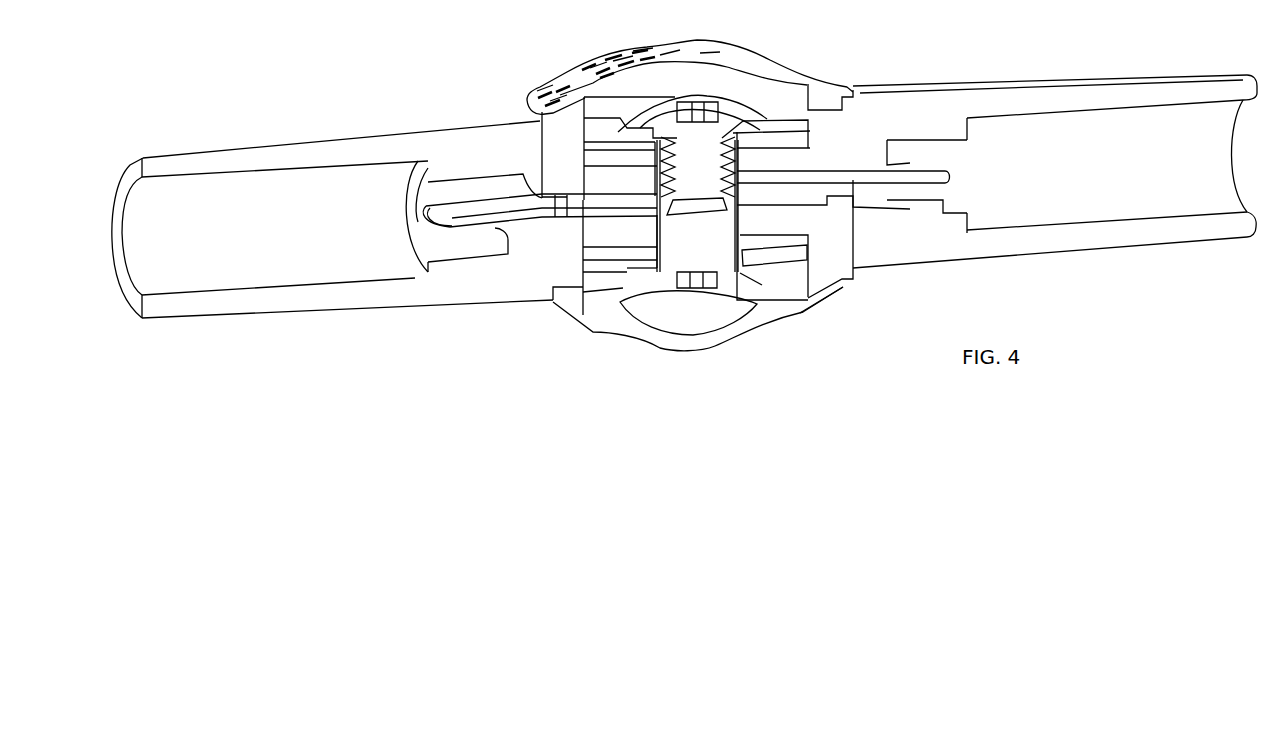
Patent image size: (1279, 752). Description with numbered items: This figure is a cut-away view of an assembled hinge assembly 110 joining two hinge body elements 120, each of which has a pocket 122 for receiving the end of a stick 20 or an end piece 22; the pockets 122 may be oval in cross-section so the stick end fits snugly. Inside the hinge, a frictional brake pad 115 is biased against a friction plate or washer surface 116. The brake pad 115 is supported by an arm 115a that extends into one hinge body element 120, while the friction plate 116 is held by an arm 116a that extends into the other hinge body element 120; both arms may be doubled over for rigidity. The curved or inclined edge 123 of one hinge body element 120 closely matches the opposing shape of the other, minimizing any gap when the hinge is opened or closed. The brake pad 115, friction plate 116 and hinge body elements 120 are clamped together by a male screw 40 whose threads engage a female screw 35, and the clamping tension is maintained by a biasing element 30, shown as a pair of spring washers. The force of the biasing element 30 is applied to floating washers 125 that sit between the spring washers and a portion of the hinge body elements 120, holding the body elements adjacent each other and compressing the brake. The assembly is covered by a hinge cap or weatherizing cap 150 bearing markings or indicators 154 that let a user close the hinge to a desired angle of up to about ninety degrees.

The hinge assembly 110 is at (300, 108).
The pocket 122 is at (137, 222).
The hinge body element 120 is at (450, 143).
The friction plate 116 is at (540, 222).
The arm of friction plate 116a is at (448, 232).
The curved or inclined edge 123 is at (537, 153).
The hinge cap 150 is at (573, 77).
The markings or indicators 154 is at (557, 87).
The floating washer 125 is at (627, 142).
The male screw 40 is at (737, 115).
The female screw 35 is at (722, 265).
The biasing element 30 is at (783, 130).
The frictional brake pad 115 is at (790, 192).
The arm of frictional brake pad 115a is at (918, 173).
The tubing 20 is at (1037, 93).
The lumen 22 is at (1120, 163).